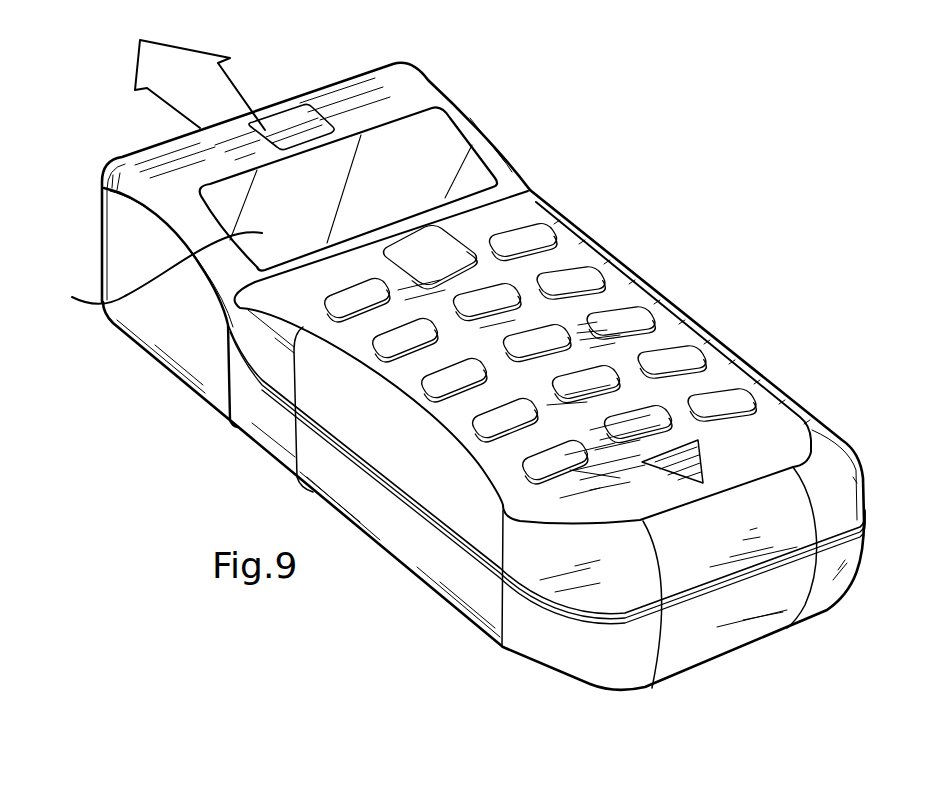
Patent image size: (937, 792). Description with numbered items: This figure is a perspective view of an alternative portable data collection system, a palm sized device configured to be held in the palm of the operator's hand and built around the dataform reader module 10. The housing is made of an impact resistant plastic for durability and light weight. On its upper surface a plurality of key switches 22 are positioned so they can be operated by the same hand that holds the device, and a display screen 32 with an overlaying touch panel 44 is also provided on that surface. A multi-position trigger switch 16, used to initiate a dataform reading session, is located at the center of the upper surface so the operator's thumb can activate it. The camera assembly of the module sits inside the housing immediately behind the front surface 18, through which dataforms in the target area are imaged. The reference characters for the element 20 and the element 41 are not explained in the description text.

The dataform reader module 10 is at (294, 128).
The trigger switch 16 is at (446, 233).
The front surface 18 is at (412, 65).
The scanning direction arrow 20 is at (135, 91).
The key switches 22 is at (688, 355).
The display screen 32 is at (433, 163).
The hand-held terminal 41 is at (780, 282).
The touch panel 44 is at (152, 270).